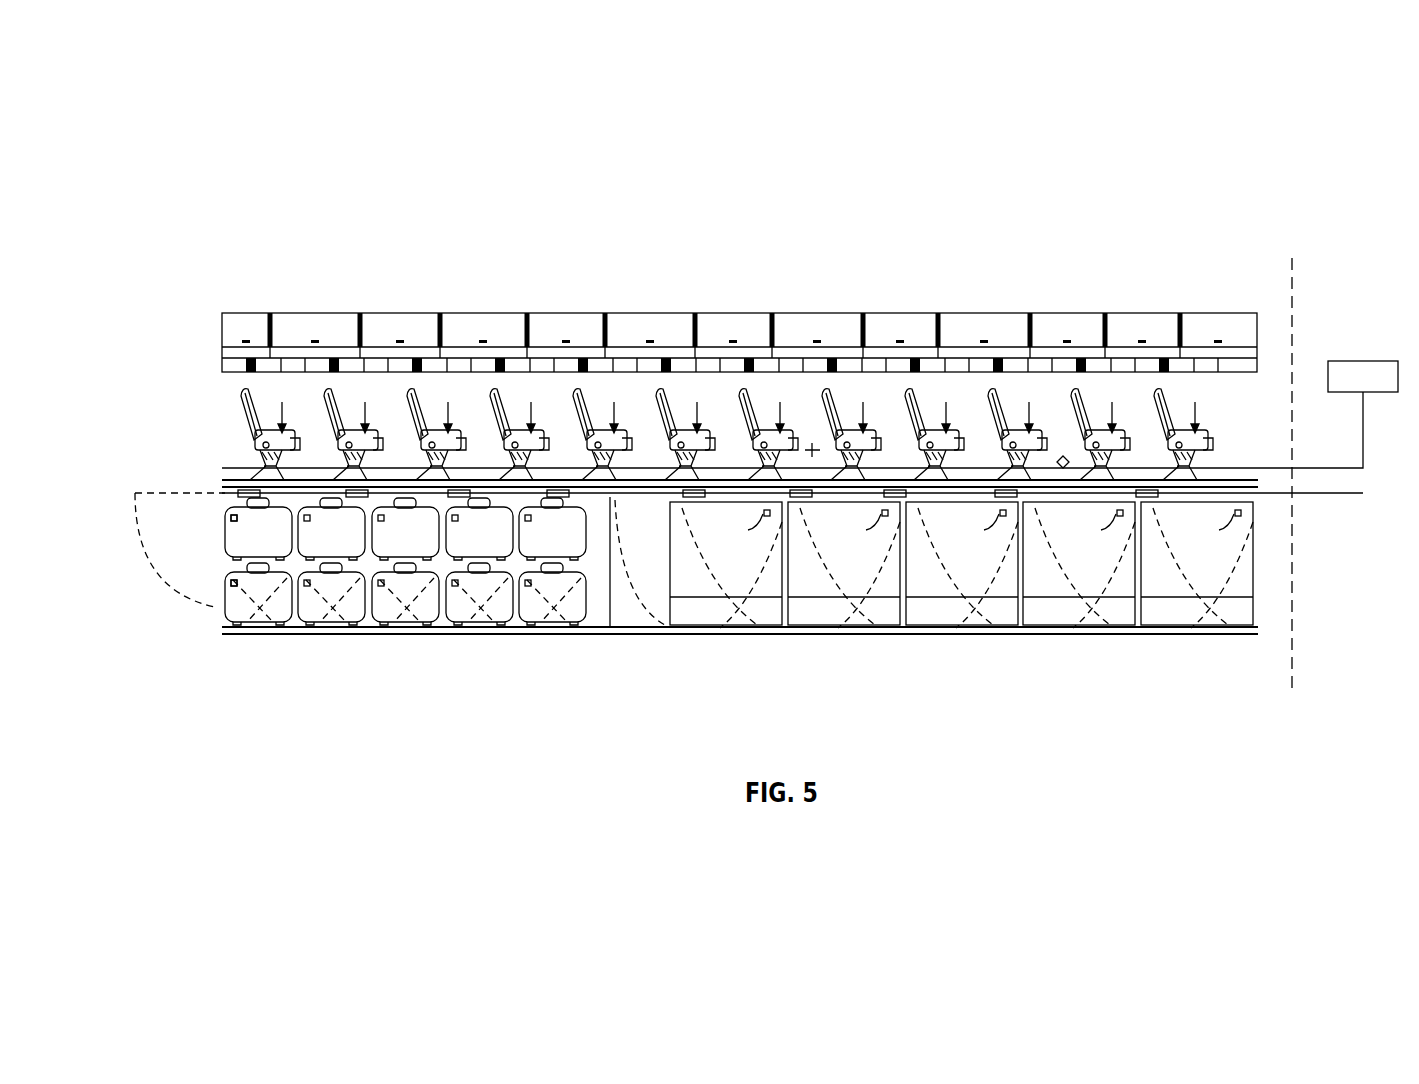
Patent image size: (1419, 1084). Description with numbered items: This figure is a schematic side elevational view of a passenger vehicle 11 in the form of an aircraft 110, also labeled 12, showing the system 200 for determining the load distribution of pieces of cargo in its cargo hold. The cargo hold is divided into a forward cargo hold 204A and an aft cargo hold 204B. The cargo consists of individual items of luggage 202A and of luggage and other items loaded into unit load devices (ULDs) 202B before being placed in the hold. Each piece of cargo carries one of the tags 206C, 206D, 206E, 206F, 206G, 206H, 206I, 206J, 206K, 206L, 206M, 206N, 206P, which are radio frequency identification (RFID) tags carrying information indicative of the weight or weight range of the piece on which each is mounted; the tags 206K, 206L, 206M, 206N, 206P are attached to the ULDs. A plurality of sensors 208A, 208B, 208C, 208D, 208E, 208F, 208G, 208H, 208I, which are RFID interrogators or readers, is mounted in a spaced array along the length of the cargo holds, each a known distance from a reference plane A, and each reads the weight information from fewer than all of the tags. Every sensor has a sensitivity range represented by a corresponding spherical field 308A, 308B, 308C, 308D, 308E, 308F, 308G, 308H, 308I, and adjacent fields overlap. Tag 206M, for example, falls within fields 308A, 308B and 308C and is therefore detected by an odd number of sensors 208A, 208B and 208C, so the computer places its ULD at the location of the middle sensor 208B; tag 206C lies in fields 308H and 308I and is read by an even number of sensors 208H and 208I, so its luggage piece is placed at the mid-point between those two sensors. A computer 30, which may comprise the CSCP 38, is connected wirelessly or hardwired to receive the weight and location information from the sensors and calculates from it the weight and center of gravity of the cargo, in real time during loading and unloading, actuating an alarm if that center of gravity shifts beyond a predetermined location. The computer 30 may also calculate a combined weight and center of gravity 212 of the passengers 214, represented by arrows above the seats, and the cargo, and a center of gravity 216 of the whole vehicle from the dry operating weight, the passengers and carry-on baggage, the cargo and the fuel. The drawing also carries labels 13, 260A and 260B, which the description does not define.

The vehicle 11 is at (739, 291).
The fuselage 12 is at (739, 291).
The aircraft 110 is at (722, 305).
The passenger cabin 13 is at (626, 387).
The system for determining load distribution 200 is at (976, 290).
The luggage 202A is at (404, 667).
The unit load devices (ULDs) 202B is at (953, 615).
The forward cargo hold 204A is at (929, 612).
The aft cargo hold 204B is at (386, 632).
The tag 206C is at (275, 427).
The tag 206D is at (311, 590).
The tag 206E is at (359, 427).
The tag 206F is at (406, 647).
The tag 206G is at (443, 427).
The tag 206H is at (517, 667).
The tag 206I is at (520, 427).
The tag 206J is at (586, 650).
The tag 206K is at (717, 607).
The tag 206L is at (865, 615).
The tag 206M is at (962, 599).
The tag 206N is at (1079, 565).
The tag 206P is at (1197, 591).
The sensor 208A is at (1148, 492).
The sensor 208B is at (1008, 489).
The sensor 208C is at (893, 497).
The sensor 208D is at (800, 488).
The sensor 208E is at (698, 489).
The sensor 208F is at (549, 496).
The sensor 208G is at (383, 496).
The sensor 208H is at (306, 496).
The sensor 208I is at (245, 490).
The combined weight and/or center of gravity 212 is at (825, 379).
The center of gravity of the vehicle 216 is at (819, 448).
The passengers 214 is at (866, 405).
The baggage sensor 260A is at (230, 516).
The baggage sensor 260B is at (234, 589).
The spherical field 308A is at (1225, 621).
The spherical field 308B is at (983, 621).
The spherical field 308C is at (928, 634).
The spherical field 308D is at (714, 600).
The spherical field 308E is at (660, 621).
The spherical field 308F is at (553, 631).
The spherical field 308G is at (480, 644).
The spherical field 308H is at (397, 638).
The spherical field 308I is at (178, 608).
The computer 30 is at (1363, 349).
The CSCP 38 is at (1353, 360).
The reference plane A is at (1298, 285).